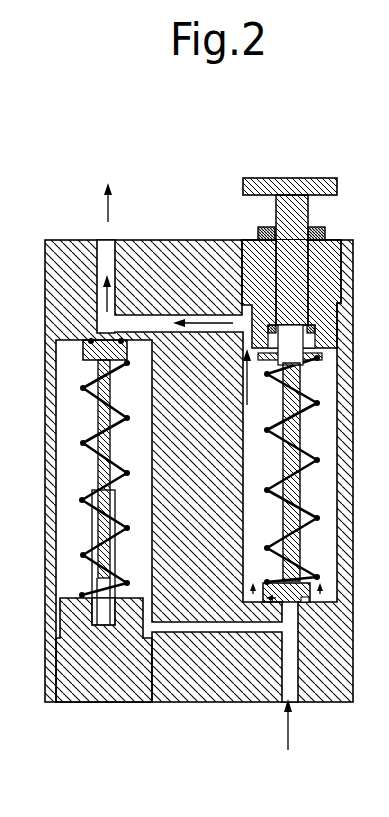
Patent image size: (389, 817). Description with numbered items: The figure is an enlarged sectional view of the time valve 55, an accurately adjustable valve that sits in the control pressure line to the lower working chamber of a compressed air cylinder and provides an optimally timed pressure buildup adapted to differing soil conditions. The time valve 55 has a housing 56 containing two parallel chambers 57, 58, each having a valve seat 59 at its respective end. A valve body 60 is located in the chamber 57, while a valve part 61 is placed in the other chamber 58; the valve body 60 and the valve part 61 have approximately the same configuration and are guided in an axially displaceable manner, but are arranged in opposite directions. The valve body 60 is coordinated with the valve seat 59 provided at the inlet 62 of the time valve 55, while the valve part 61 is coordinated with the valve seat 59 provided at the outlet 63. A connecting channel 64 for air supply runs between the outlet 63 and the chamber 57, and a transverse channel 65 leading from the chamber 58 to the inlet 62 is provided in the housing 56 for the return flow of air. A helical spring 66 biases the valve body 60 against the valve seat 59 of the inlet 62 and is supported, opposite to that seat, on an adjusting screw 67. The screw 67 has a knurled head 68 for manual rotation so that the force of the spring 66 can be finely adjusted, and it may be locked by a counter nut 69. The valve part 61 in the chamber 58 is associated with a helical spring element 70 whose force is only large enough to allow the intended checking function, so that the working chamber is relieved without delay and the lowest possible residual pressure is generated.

The time valve 55 is at (209, 172).
The housing 56 is at (197, 703).
The chamber 57 is at (304, 453).
The chamber 58 is at (85, 483).
The valve seat 59 is at (88, 338).
The valve body 60 is at (315, 597).
The valve part 61 is at (92, 358).
The inlet 62 is at (302, 703).
The outlet 63 is at (105, 243).
The connecting channel 64 is at (155, 318).
The transverse channel 65 is at (253, 623).
The helical spring 66 is at (278, 438).
The adjusting screw 67 is at (300, 217).
The knurled head 68 is at (337, 188).
The counter nut 69 is at (260, 232).
The helical spring element 70 is at (127, 416).